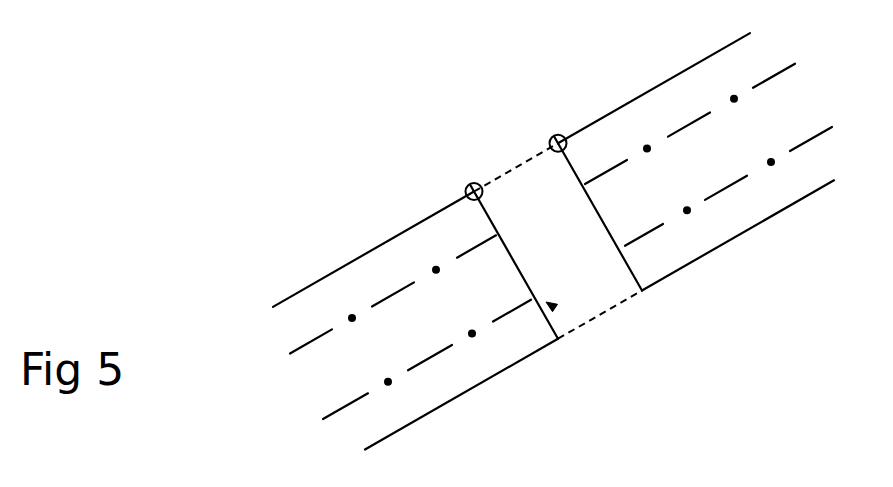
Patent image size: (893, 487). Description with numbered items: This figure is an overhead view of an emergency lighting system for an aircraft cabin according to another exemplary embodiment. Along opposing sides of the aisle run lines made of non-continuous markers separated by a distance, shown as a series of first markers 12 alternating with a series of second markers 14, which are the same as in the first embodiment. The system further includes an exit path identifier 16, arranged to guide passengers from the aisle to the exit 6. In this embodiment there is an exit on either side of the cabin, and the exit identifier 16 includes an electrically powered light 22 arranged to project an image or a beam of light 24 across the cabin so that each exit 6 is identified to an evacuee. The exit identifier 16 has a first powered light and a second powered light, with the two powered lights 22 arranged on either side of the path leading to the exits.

The exit 6 is at (633, 295).
The first marker 12 is at (352, 318).
The second marker 14 is at (398, 290).
The exit path identifier 16 is at (555, 308).
The electrically powered light 22 is at (467, 184).
The beam of light 24 is at (571, 174).